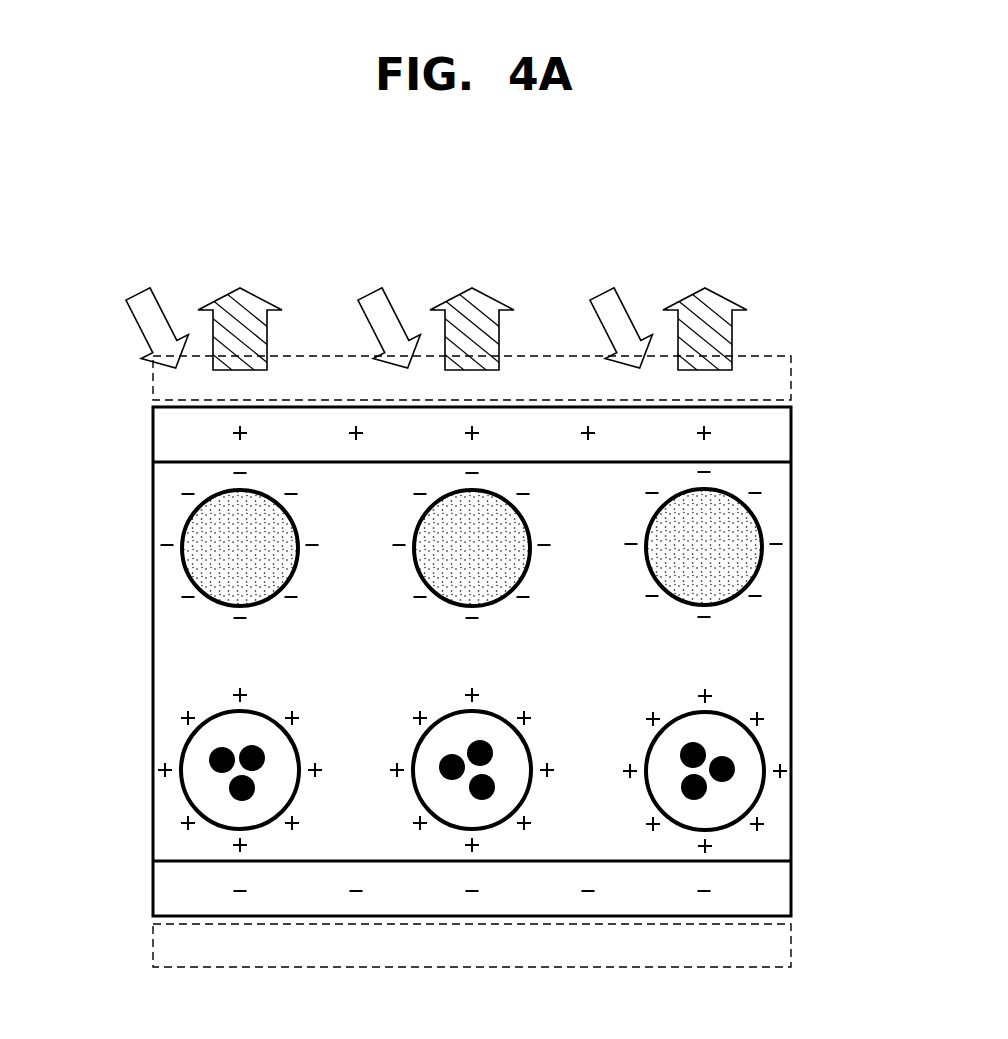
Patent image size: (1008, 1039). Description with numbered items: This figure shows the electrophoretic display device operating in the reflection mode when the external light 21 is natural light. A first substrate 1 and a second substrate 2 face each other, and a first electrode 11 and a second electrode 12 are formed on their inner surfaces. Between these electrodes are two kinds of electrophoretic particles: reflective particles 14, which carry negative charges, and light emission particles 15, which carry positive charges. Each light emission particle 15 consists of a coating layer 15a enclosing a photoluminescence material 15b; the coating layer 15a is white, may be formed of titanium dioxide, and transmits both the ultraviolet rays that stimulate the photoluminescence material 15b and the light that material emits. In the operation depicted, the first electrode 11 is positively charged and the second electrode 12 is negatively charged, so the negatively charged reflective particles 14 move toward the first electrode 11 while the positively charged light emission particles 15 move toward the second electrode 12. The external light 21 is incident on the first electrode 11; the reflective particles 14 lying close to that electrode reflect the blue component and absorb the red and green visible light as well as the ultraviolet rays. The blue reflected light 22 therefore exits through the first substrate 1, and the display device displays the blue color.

The first substrate 1 is at (792, 371).
The second substrate 2 is at (792, 950).
The first electrode 11 is at (791, 425).
The second electrode 12 is at (782, 893).
The reflective particle 14 is at (750, 530).
The light emission particle 15 is at (469, 770).
The coating layer 15a is at (186, 743).
The photoluminescence material 15b is at (228, 788).
The external light 21 is at (137, 292).
The blue reflected light 22 is at (213, 298).